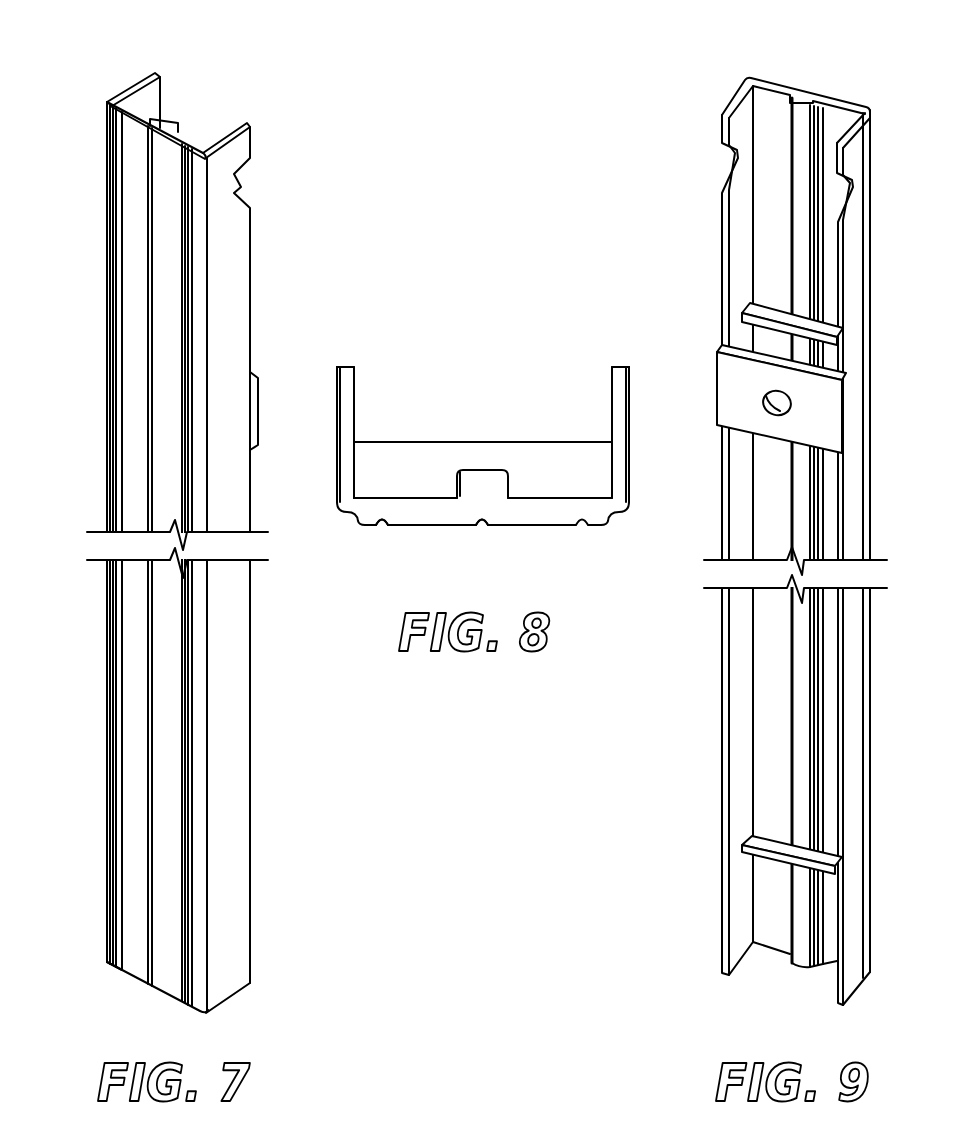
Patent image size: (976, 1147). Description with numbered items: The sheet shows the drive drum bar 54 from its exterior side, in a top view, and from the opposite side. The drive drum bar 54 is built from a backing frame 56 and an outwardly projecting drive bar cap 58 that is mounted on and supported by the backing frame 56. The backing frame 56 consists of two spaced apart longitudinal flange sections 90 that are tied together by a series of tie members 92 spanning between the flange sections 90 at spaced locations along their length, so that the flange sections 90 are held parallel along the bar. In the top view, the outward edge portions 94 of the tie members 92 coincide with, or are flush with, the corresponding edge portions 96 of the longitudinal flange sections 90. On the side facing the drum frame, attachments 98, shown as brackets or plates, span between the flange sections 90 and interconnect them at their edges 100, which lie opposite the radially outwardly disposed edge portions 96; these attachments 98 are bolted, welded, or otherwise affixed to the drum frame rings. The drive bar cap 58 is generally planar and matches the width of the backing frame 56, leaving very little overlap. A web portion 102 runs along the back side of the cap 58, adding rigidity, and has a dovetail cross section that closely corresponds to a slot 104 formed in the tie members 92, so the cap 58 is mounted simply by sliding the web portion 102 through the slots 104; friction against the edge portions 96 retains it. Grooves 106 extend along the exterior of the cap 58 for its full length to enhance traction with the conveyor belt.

In FIG. 7, the drive drum bar 54 is at (81, 81).
In FIG. 8, the drive drum bar 54 is at (495, 317).
In FIG. 7, the backing frame 56 is at (206, 122).
In FIG. 8, the backing frame 56 is at (368, 406).
In FIG. 9, the backing frame 56 is at (708, 215).
In FIG. 7, the drive bar cap 58 is at (98, 190).
In FIG. 8, the drive bar cap 58 is at (347, 535).
In FIG. 9, the drive bar cap 58 is at (815, 80).
In FIG. 7, the longitudinal flange sections 90 is at (233, 250).
In FIG. 8, the longitudinal flange sections 90 is at (337, 437).
In FIG. 9, the longitudinal flange sections 90 is at (720, 237).
In FIG. 8, the tie members 92 is at (481, 441).
In FIG. 9, the tie members 92 is at (817, 323).
In FIG. 8, the outward edge portions 94 is at (546, 495).
In FIG. 8, the edge portions 96 is at (342, 510).
In FIG. 7, the attachments 98 is at (258, 392).
In FIG. 9, the attachments 98 is at (815, 418).
In FIG. 8, the edges 100 is at (622, 367).
In FIG. 9, the edges 100 is at (840, 517).
In FIG. 8, the web portion 102 is at (481, 471).
In FIG. 9, the web portion 102 is at (803, 130).
In FIG. 8, the slot 104 is at (468, 471).
In FIG. 7, the grooves 106 is at (152, 680).
In FIG. 8, the grooves 106 is at (382, 526).